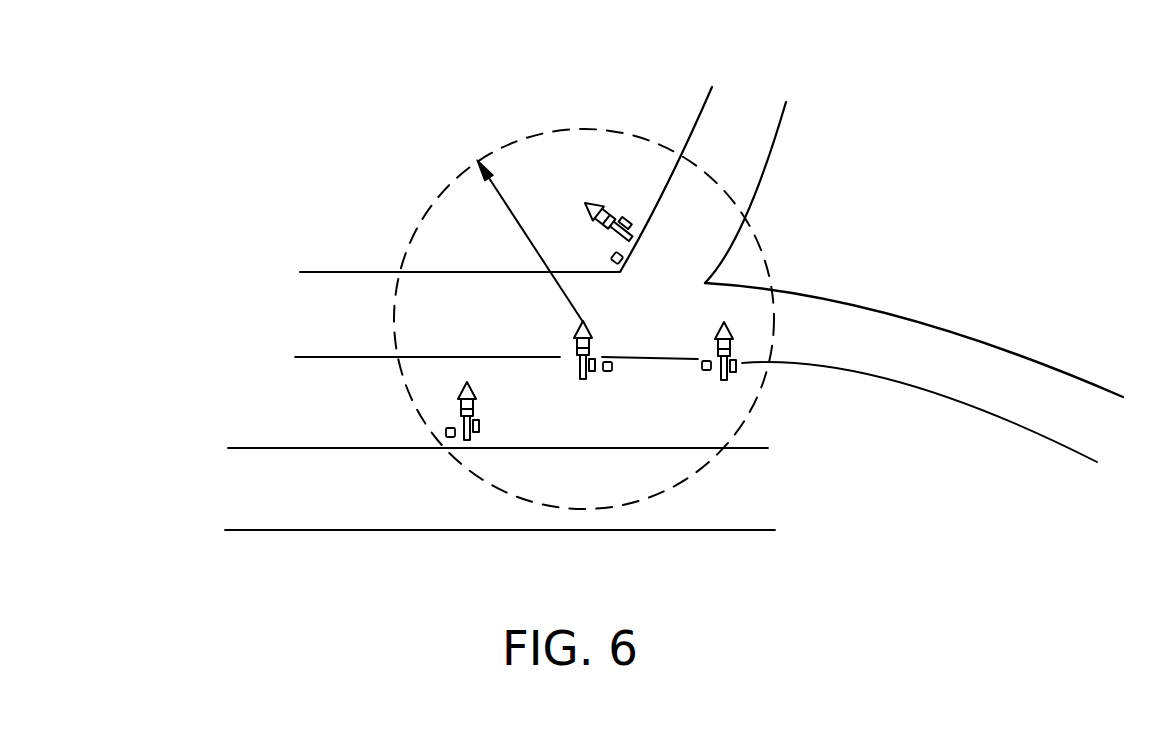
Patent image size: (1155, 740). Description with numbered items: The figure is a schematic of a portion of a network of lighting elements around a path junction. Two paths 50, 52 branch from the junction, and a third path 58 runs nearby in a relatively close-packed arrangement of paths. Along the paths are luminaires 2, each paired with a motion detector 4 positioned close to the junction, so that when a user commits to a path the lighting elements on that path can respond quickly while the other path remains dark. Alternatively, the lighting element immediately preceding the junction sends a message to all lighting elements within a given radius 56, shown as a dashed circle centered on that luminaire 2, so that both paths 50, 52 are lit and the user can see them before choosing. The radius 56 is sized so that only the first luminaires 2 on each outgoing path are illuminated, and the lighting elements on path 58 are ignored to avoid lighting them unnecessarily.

The luminaire 2 is at (578, 331).
The motion detector 4 is at (613, 368).
The path 50 is at (707, 235).
The path 52 is at (889, 365).
The radius 56 is at (515, 225).
The path 58 is at (337, 500).